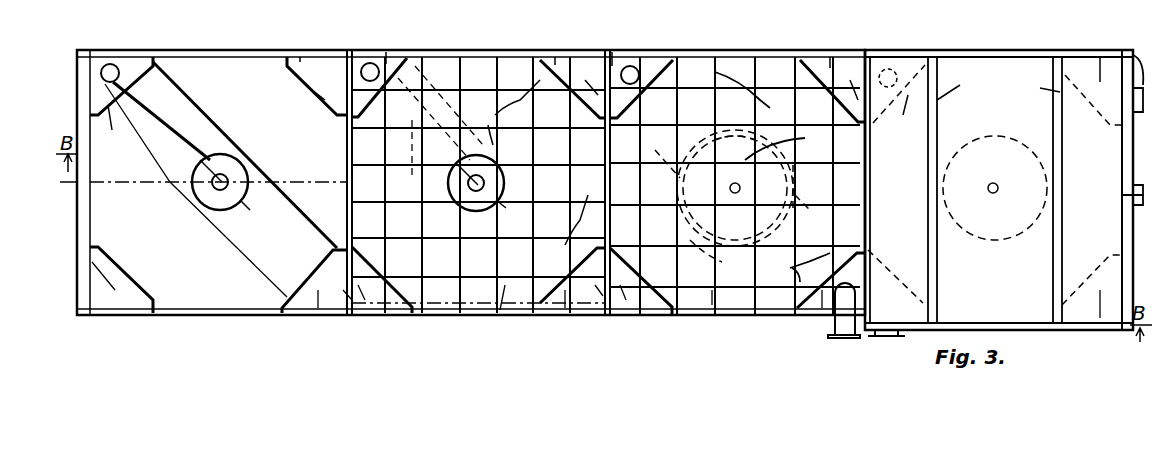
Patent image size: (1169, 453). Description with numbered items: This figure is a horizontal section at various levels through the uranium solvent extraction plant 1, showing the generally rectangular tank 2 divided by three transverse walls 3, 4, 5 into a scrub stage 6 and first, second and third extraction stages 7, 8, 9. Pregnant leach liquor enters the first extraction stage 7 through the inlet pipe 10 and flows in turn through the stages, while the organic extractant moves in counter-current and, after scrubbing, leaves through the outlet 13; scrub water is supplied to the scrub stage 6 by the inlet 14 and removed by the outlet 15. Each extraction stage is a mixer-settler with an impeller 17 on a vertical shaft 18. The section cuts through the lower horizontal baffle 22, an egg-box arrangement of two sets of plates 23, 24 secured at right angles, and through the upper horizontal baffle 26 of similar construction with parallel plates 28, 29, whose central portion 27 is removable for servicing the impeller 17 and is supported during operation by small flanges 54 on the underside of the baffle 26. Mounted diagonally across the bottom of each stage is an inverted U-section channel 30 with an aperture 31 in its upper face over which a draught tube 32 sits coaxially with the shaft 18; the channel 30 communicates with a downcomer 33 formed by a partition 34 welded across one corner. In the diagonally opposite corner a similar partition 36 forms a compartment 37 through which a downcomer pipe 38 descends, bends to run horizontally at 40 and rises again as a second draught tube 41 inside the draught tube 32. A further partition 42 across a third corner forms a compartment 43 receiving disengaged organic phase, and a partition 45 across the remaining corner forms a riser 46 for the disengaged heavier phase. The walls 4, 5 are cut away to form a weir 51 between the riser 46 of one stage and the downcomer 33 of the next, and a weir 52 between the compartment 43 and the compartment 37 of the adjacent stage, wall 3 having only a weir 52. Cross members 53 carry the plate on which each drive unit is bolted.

The uranium solvent extraction plant 1 is at (746, 46).
The tank 2 is at (232, 316).
The transverse wall 3 is at (866, 190).
The transverse wall 4 is at (606, 165).
The transverse wall 5 is at (352, 162).
The scrub stage 6 is at (1122, 166).
The first extraction stage 7 is at (697, 55).
The second extraction stage 8 is at (458, 50).
The third extraction stage 9 is at (213, 50).
The inlet pipe 10 is at (840, 338).
The outlet 13 is at (1140, 86).
The inlet 14 is at (1133, 200).
The outlet 15 is at (886, 338).
The impeller 17 is at (678, 220).
The vertical shaft 18 is at (740, 188).
The lower horizontal baffle 22 is at (500, 310).
The plates 23 is at (500, 110).
The plates 24 is at (570, 238).
The upper horizontal baffle 26 is at (712, 308).
The central portion 27 is at (795, 140).
The parallel plates 28 is at (770, 108).
The parallel plates 29 is at (790, 264).
The channel 30 is at (250, 236).
The aperture 31 is at (245, 165).
The draught tube 32 is at (240, 200).
The downcomer 33 is at (320, 310).
The partition 34 is at (308, 298).
The partition 36 is at (142, 62).
The compartment 37 is at (112, 132).
The downcomer pipe 38 is at (110, 63).
The horizontal portion of downcomer pipe 40 is at (185, 120).
The second draught tube 41 is at (200, 200).
The partition 42 is at (300, 80).
The compartment 43 is at (296, 62).
The partition 45 is at (135, 290).
The riser 46 is at (115, 292).
The weir 51 is at (350, 300).
The weir 52 is at (340, 75).
The cross members 53 is at (998, 86).
The flanges 54 is at (718, 110).